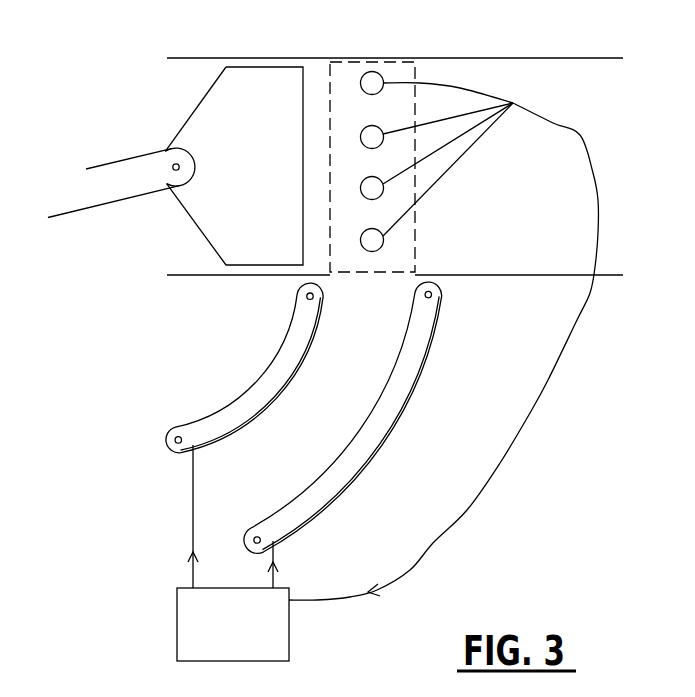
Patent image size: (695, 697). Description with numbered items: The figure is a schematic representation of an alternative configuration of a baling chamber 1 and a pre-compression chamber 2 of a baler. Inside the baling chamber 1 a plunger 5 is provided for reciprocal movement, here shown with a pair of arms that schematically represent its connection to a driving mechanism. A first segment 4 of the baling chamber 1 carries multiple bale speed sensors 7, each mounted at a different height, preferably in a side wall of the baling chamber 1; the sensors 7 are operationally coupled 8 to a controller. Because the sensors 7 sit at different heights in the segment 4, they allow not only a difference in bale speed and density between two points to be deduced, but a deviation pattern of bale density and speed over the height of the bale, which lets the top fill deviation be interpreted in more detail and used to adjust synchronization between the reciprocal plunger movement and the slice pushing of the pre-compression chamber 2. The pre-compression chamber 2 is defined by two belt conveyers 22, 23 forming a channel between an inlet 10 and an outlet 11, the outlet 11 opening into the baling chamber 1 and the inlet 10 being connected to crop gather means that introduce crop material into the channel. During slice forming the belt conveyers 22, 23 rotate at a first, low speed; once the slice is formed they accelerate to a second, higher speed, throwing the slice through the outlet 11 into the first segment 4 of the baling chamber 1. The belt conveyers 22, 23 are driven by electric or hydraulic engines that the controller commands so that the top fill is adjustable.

The baling chamber 1 is at (619, 148).
The pre-compression chamber 2 is at (287, 417).
The segment of the baling chamber 4 is at (398, 72).
The plunger 5 is at (248, 125).
The bale speed sensors 7 is at (370, 86).
The operational coupling 8 is at (548, 380).
The inlet 10 is at (178, 503).
The outlet 11 is at (374, 301).
The belt conveyer 22 is at (430, 315).
The belt conveyer 23 is at (252, 387).